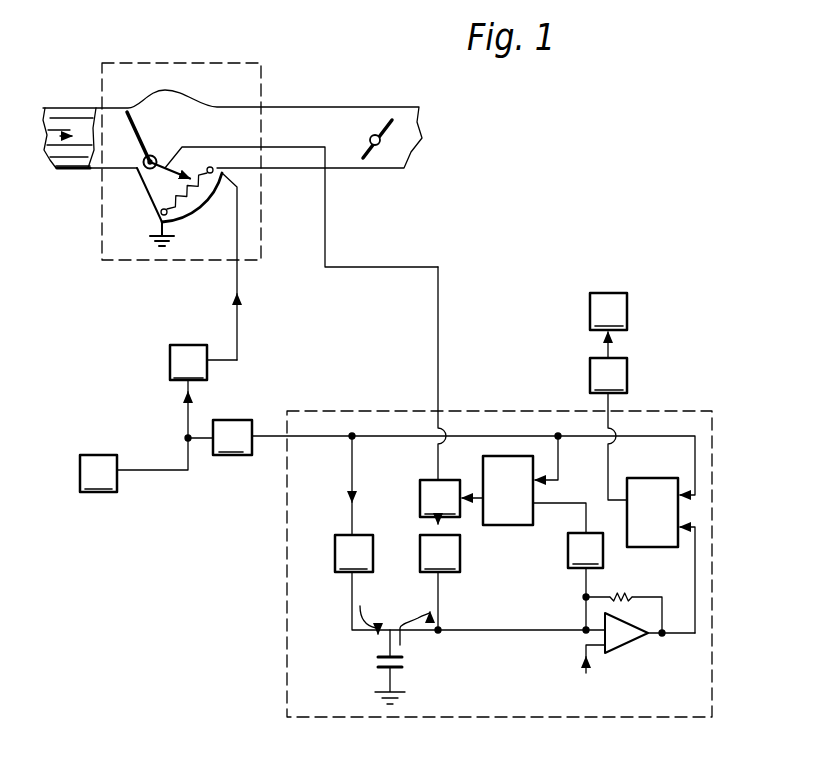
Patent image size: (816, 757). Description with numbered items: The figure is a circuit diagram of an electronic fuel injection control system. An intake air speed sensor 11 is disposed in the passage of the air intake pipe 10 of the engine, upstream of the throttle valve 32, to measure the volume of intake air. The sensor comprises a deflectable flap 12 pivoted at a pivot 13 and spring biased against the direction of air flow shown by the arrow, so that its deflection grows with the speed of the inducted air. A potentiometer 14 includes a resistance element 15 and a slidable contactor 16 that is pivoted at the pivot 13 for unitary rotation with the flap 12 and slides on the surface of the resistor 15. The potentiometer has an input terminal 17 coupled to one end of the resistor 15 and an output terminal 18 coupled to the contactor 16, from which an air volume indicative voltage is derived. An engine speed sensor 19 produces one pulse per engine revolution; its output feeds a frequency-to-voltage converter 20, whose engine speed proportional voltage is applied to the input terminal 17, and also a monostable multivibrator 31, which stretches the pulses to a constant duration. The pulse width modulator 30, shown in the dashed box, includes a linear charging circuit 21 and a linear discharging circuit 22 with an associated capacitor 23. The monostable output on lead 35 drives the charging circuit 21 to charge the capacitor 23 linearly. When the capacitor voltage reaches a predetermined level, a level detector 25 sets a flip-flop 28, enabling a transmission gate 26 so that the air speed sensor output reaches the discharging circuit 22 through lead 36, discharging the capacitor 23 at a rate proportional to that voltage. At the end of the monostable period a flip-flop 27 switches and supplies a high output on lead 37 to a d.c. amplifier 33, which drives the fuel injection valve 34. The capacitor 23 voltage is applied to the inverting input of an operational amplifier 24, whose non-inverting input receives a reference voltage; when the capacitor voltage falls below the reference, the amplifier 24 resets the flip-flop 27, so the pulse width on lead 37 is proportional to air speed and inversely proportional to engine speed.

The air intake pipe 10 is at (75, 108).
The intake air speed sensor 11 is at (137, 62).
The deflectable flap 12 is at (137, 126).
The pivot 13 is at (156, 158).
The potentiometer 14 is at (150, 197).
The resistance element 15 is at (190, 215).
The slidable contactor 16 is at (182, 172).
The input terminal 17 is at (237, 268).
The output terminal 18 is at (287, 147).
The engine speed sensor 19 is at (93, 492).
The frequency-to-voltage converter 20 is at (170, 377).
The linear charging circuit 21 is at (335, 562).
The linear discharging circuit 22 is at (460, 563).
The capacitor 23 is at (402, 660).
The operational amplifier 24 is at (625, 644).
The level detector 25 is at (568, 540).
The transmission gate 26 is at (420, 497).
The flip-flop 27 is at (652, 548).
The flip-flop 28 is at (507, 456).
The pulse width modulator 30 is at (328, 717).
The monostable multivibrator 31 is at (222, 455).
The throttle valve 32 is at (420, 112).
The d.c. amplifier 33 is at (627, 378).
The fuel injection valve 34 is at (600, 293).
The lead 35 is at (268, 435).
The lead 36 is at (440, 377).
The lead 37 is at (608, 402).